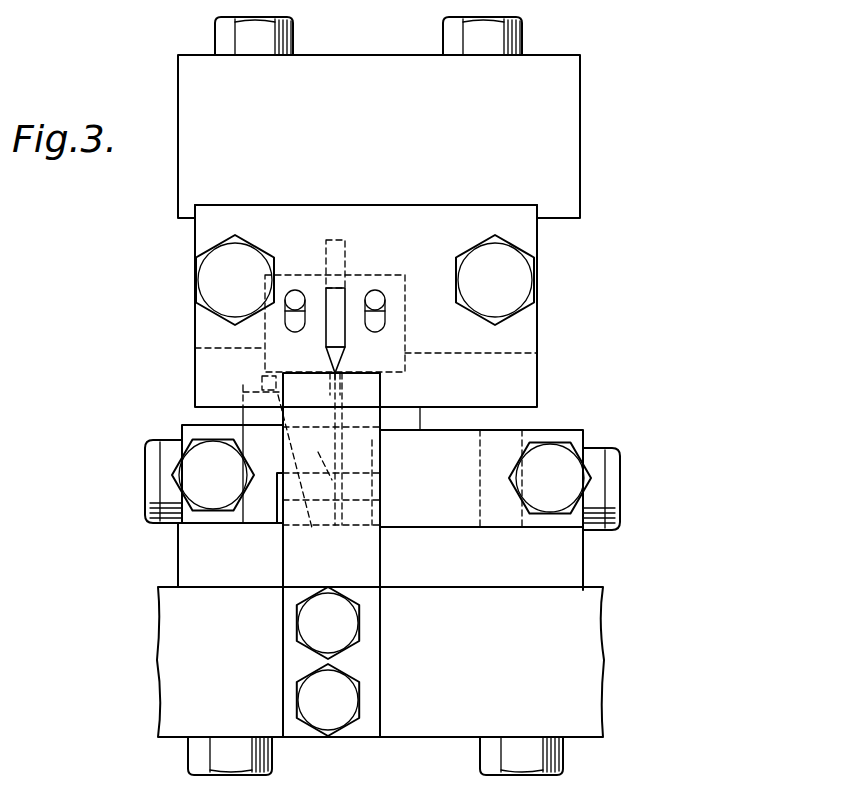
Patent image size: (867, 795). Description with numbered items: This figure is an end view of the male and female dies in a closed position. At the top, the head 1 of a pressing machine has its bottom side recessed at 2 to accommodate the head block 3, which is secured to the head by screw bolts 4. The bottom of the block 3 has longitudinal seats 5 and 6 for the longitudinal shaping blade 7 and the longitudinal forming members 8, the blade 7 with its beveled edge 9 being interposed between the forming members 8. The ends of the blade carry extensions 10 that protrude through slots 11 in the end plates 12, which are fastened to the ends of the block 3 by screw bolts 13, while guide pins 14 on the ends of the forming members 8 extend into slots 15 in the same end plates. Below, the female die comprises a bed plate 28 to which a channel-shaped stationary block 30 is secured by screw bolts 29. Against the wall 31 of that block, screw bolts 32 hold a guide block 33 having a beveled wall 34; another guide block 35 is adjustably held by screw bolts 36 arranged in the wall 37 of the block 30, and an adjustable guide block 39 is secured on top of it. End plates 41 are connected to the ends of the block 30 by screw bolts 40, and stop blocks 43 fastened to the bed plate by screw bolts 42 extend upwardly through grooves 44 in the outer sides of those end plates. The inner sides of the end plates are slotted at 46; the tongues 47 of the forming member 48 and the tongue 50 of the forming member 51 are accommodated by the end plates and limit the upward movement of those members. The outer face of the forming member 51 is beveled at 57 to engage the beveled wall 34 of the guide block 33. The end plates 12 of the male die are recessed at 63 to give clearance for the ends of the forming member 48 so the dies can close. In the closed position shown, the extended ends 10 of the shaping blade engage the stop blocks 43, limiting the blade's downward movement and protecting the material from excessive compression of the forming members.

The head 1 is at (556, 150).
The recess 2 is at (520, 205).
The head block 3 is at (540, 336).
The screw bolts 4 is at (518, 40).
The longitudinal seat 5 is at (335, 240).
The longitudinal seats 6 is at (296, 276).
The shaping blade 7 is at (345, 260).
The forming members 8 is at (263, 334).
The beveled edge 9 is at (347, 357).
The extensions 10 is at (332, 308).
The slots 11 is at (325, 361).
The end plates 12 is at (463, 382).
The screw bolts 13 is at (365, 280).
The guide pins 14 is at (285, 303).
The slots 15 is at (290, 322).
The bed plate 28 is at (587, 637).
The screw bolts 29 is at (563, 756).
The stationary block 30 is at (573, 567).
The wall 31 is at (228, 433).
The screw bolts 32 is at (157, 478).
The guide block 33 is at (208, 518).
The beveled wall 34 is at (277, 575).
The guide block 35 is at (505, 426).
The screw bolts 36 is at (618, 478).
The wall 37 is at (555, 426).
The adjustable guide block 39 is at (406, 418).
The screw bolts 40 is at (381, 477).
The end plates 41 is at (446, 501).
The screw bolts 42 is at (313, 688).
The stop blocks 43 is at (314, 528).
The grooves 44 is at (382, 508).
The slots 46 is at (277, 508).
The tongues 47 is at (386, 490).
The forming member 48 is at (380, 395).
The tongue 50 is at (266, 590).
The forming member 51 is at (372, 570).
The beveled outer face 57 is at (184, 382).
The recess 63 is at (537, 357).